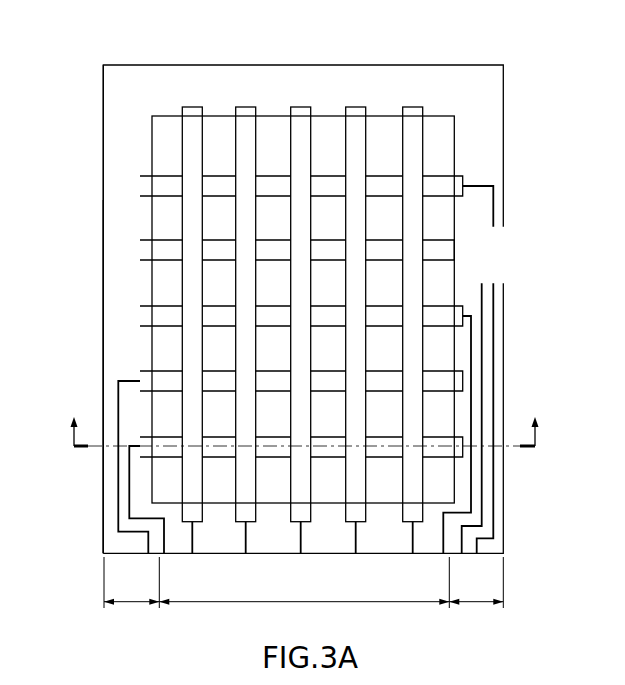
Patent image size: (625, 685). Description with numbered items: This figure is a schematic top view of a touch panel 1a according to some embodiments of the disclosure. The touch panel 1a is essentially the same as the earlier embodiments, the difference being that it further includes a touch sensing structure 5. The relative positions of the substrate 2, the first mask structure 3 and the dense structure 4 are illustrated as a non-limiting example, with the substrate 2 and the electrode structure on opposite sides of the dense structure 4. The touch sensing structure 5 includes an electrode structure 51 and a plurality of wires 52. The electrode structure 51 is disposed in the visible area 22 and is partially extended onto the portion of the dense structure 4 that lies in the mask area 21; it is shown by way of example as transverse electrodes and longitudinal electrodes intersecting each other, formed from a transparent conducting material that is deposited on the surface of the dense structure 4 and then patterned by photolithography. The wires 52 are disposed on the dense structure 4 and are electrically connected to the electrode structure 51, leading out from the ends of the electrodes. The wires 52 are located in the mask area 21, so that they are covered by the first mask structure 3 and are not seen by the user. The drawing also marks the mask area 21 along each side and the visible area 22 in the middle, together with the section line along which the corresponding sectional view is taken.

The touch panel 1a is at (111, 47).
The substrate 2 is at (323, 70).
The first mask structure 3 is at (103, 243).
The dense structure 4 is at (103, 290).
The touch sensing structure 5 is at (538, 123).
The electrode structure 51 is at (423, 134).
The wires 52 is at (495, 207).
The mask area 21 is at (303, 582).
The visible area 22 is at (304, 593).